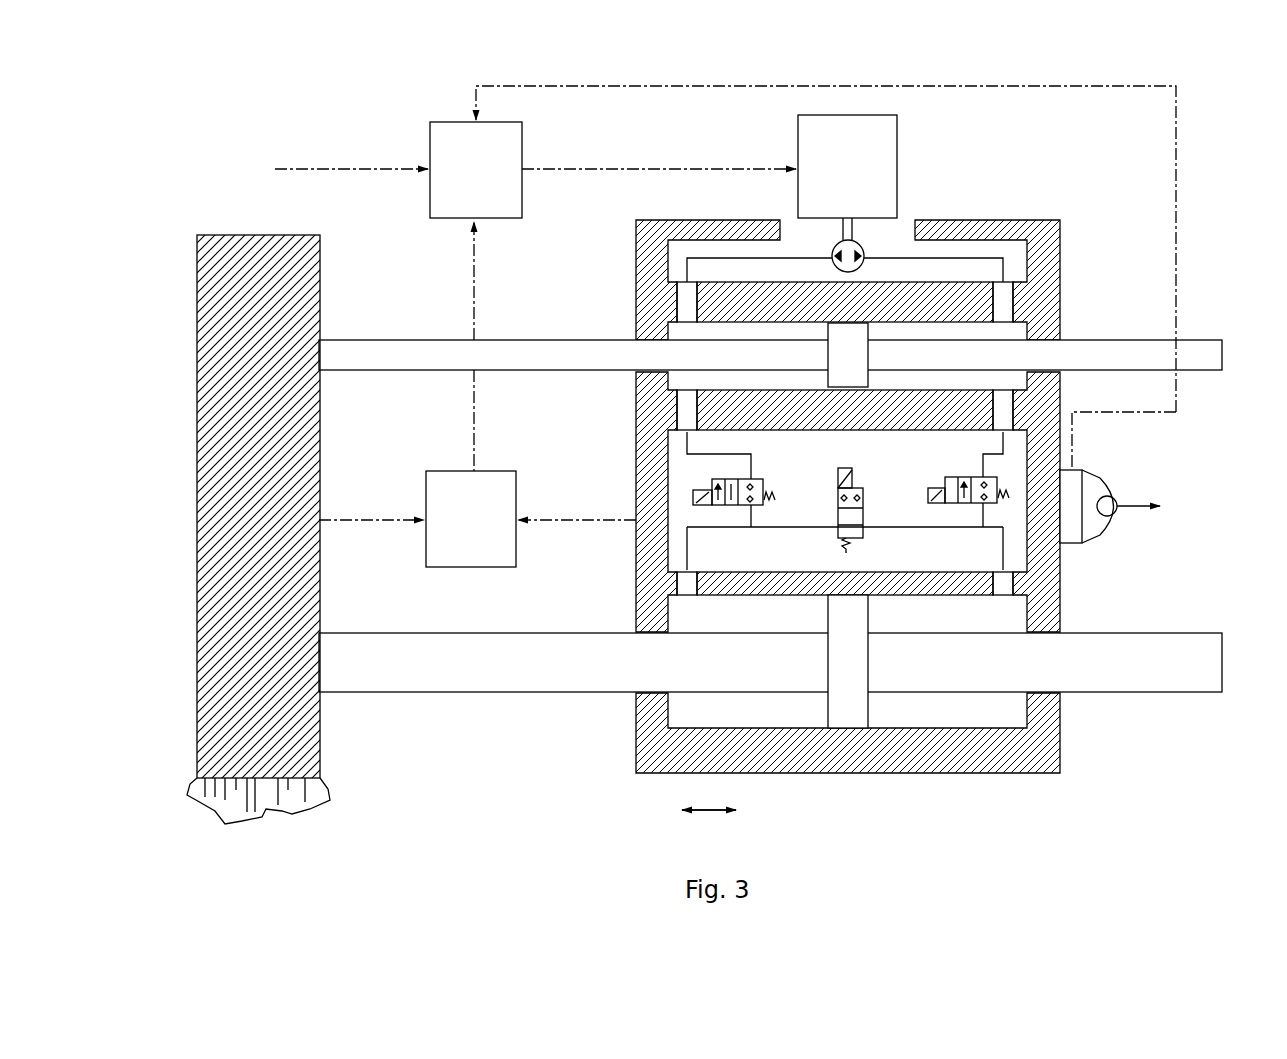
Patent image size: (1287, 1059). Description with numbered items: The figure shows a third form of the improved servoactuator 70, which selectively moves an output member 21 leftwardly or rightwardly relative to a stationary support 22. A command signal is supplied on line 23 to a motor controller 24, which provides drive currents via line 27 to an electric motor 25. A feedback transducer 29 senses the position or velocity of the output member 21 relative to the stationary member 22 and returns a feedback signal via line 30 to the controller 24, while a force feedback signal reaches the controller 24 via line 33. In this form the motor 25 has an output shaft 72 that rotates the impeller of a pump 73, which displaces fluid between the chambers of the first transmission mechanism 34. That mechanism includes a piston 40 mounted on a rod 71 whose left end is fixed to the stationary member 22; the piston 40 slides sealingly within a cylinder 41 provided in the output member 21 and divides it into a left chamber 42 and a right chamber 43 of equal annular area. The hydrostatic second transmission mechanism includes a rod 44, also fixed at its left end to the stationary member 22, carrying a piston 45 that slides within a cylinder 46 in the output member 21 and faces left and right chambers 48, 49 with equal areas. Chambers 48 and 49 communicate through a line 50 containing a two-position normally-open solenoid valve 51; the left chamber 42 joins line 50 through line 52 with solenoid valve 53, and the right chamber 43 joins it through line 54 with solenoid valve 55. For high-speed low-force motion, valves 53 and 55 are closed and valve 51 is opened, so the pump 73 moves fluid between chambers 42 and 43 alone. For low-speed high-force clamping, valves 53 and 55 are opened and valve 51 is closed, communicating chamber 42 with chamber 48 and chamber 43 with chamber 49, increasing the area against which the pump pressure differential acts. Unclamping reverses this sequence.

The output member 21 is at (1063, 217).
The stationary support 22 is at (196, 236).
The command signal line 23 is at (348, 175).
The motor controller 24 is at (428, 120).
The electric motor 25 is at (905, 110).
The drive current line 27 is at (610, 166).
The feedback transducer 29 is at (425, 469).
The feedback signal line 30 is at (472, 306).
The force feedback signal line 33 is at (1180, 210).
The first transmission mechanism 34 is at (1073, 327).
The piston 40 is at (869, 328).
The cylinder 41 is at (812, 396).
The left chamber 42 is at (720, 331).
The right chamber 43 is at (1035, 270).
The rod 44 is at (578, 654).
The piston 45 is at (855, 657).
The cylinder 46 is at (858, 762).
The left chamber 48 is at (763, 724).
The right chamber 49 is at (963, 724).
The line 50 is at (930, 527).
The solenoid valve 51 is at (856, 485).
The line 52 is at (693, 463).
The solenoid valve 53 is at (798, 447).
The line 54 is at (1010, 468).
The solenoid valve 55 is at (935, 474).
The servoactuator 70 is at (858, 52).
The rod 71 is at (572, 350).
The output shaft 72 is at (837, 231).
The pump 73 is at (861, 240).